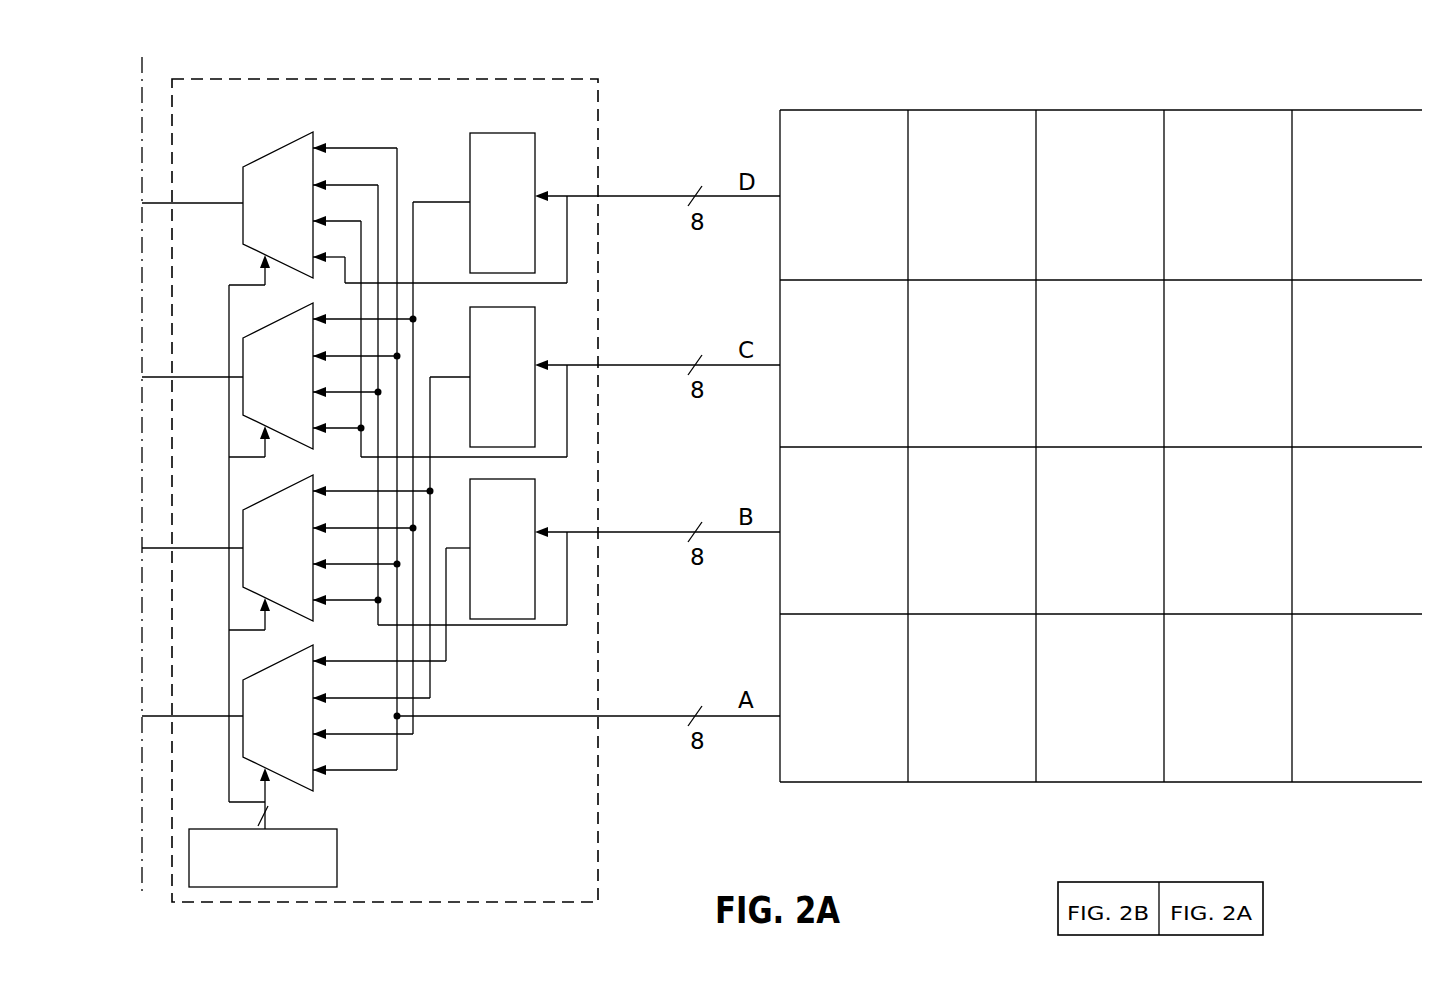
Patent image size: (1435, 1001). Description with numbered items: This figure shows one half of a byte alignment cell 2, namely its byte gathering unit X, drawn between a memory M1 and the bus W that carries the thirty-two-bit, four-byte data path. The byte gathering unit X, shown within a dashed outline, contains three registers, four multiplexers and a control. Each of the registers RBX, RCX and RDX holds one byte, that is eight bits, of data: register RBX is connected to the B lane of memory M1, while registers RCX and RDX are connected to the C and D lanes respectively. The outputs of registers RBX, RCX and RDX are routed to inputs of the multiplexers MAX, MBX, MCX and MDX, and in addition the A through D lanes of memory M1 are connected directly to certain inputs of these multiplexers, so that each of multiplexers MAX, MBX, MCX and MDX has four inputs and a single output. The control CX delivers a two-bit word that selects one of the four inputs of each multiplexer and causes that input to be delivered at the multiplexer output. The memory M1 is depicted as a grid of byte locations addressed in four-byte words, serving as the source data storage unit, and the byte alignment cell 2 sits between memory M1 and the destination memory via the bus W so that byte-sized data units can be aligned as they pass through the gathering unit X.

The byte alignment cell 2 is at (406, 474).
The byte gathering unit X is at (428, 79).
The multiplexer MDX is at (277, 150).
The multiplexer MCX is at (275, 322).
The multiplexer MBX is at (275, 494).
The multiplexer MAX is at (275, 664).
The register RDX is at (536, 165).
The register RCX is at (536, 345).
The register RBX is at (536, 515).
The control CX is at (338, 843).
The bus W is at (688, 141).
The memory M1 is at (1084, 111).